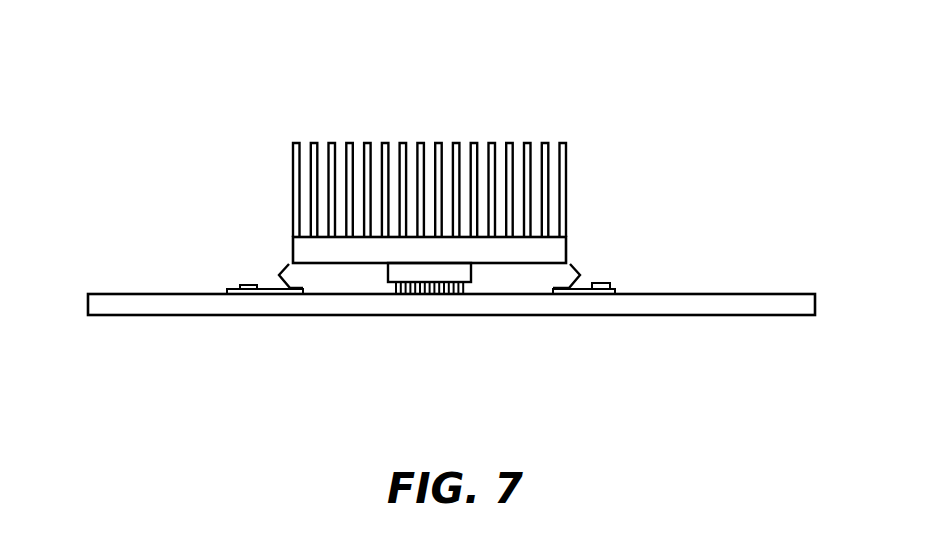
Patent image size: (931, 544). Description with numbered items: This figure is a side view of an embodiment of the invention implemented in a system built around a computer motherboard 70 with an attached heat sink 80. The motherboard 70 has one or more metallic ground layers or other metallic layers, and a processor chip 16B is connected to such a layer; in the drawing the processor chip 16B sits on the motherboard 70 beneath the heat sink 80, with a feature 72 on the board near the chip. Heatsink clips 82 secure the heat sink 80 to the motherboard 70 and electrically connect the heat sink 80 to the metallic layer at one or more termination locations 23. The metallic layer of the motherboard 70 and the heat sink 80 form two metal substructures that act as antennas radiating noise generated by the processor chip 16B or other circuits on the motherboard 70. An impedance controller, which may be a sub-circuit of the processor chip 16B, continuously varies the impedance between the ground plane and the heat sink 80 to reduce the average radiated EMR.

The heat sink 80 is at (575, 138).
The heatsink clips 82 is at (575, 272).
The termination locations 23 is at (615, 287).
The processor chip 16B is at (471, 275).
The contact pad 72 is at (268, 316).
The computer motherboard 70 is at (145, 319).